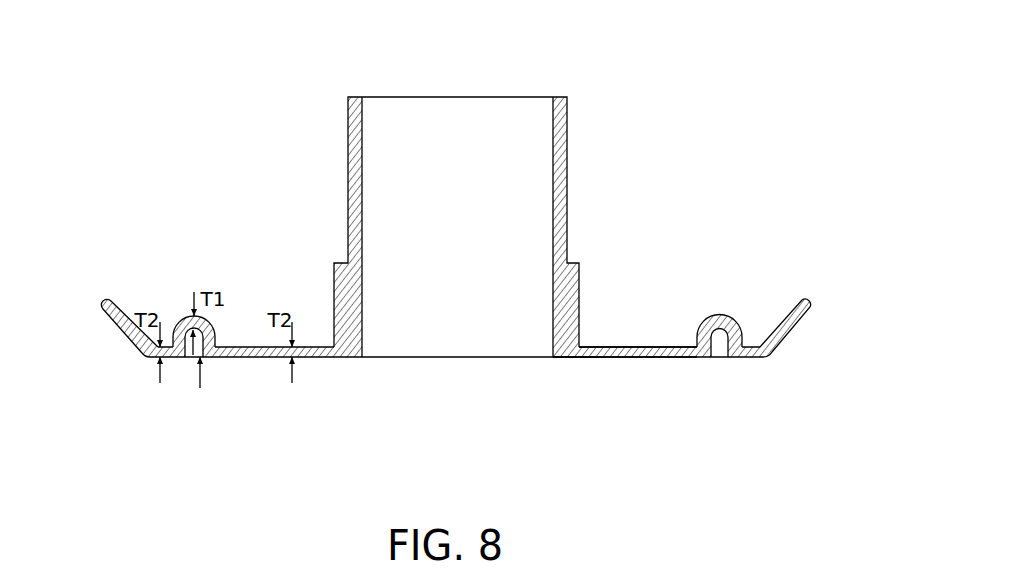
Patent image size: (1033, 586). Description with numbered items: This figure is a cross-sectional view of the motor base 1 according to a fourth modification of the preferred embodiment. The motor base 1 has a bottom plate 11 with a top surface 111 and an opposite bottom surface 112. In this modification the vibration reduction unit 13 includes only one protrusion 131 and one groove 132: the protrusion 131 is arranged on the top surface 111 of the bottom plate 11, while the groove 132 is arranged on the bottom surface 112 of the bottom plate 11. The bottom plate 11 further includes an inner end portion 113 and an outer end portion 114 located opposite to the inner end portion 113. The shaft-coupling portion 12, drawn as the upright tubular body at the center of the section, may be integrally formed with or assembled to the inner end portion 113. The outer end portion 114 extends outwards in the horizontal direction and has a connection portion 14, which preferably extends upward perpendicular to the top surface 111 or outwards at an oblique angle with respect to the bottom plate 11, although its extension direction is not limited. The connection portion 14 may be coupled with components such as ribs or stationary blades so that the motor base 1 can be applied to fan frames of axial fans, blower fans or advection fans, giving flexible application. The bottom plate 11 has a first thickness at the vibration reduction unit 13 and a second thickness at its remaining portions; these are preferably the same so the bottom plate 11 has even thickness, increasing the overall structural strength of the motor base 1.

The motor base 1 is at (566, 78).
The bottom plate 11 is at (635, 360).
The top surface 111 is at (604, 346).
The bottom surface 112 is at (600, 358).
The inner end portion 113 is at (577, 372).
The outer end portion 114 is at (143, 374).
The shaft-coupling portion 12 is at (352, 158).
The vibration reduction unit 13 is at (237, 408).
The protrusion 131 is at (220, 341).
The groove 132 is at (197, 358).
The connection portion 14 is at (794, 313).